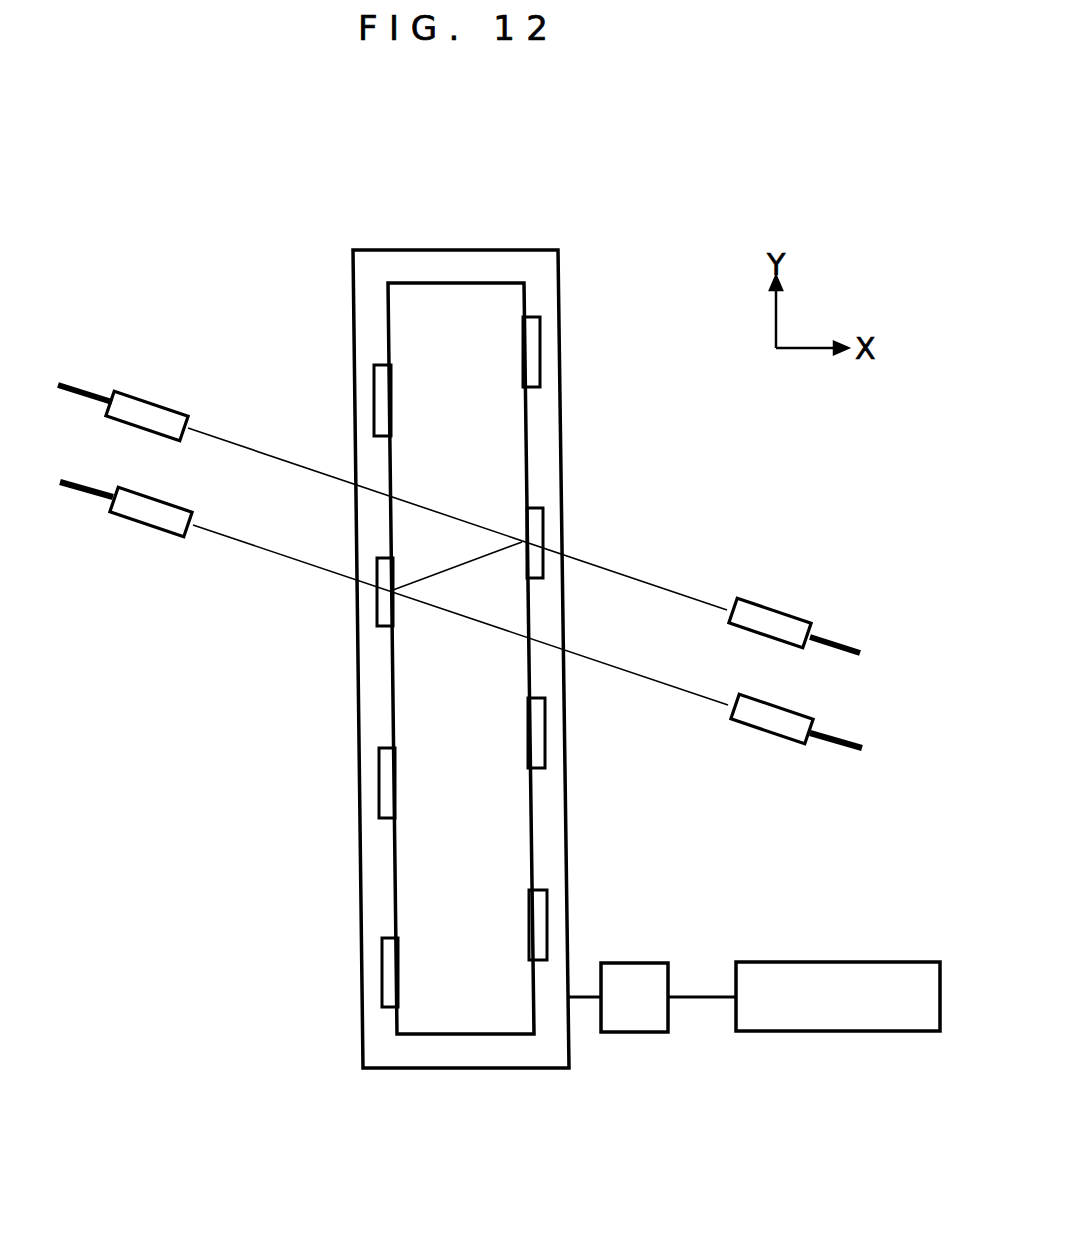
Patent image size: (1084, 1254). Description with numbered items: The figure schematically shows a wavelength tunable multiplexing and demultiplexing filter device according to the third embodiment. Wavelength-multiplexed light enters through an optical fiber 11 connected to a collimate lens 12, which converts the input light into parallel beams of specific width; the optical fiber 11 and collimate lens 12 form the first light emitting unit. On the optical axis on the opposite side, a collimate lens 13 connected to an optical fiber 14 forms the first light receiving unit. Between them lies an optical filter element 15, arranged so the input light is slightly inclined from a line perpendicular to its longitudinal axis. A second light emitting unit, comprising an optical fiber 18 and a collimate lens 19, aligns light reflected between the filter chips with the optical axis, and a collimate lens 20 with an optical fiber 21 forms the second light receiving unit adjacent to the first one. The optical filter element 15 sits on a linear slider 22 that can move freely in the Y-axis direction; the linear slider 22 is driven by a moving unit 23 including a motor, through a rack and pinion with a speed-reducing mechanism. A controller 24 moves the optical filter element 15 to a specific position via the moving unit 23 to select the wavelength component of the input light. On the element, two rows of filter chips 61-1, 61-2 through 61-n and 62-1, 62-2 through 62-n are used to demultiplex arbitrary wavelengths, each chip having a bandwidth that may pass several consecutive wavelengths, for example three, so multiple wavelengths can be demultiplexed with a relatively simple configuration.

The optical fiber 11 is at (77, 382).
The collimate lens 12 is at (152, 398).
The collimate lens 13 is at (758, 600).
The optical fiber 14 is at (832, 637).
The optical filter element 15 is at (473, 282).
The optical fiber 18 is at (75, 490).
The collimate lens 19 is at (152, 532).
The collimate lens 20 is at (757, 732).
The optical fiber 21 is at (833, 743).
The linear slider 22 is at (385, 248).
The moving unit 23 is at (632, 1033).
The controller 24 is at (833, 1032).
The filter chip 61-1 is at (540, 342).
The filter chip 61-2 is at (545, 520).
The filter chip 61-n is at (548, 922).
The filter chip 62-1 is at (374, 405).
The filter chip 62-2 is at (377, 607).
The filter chip 62-n is at (383, 963).